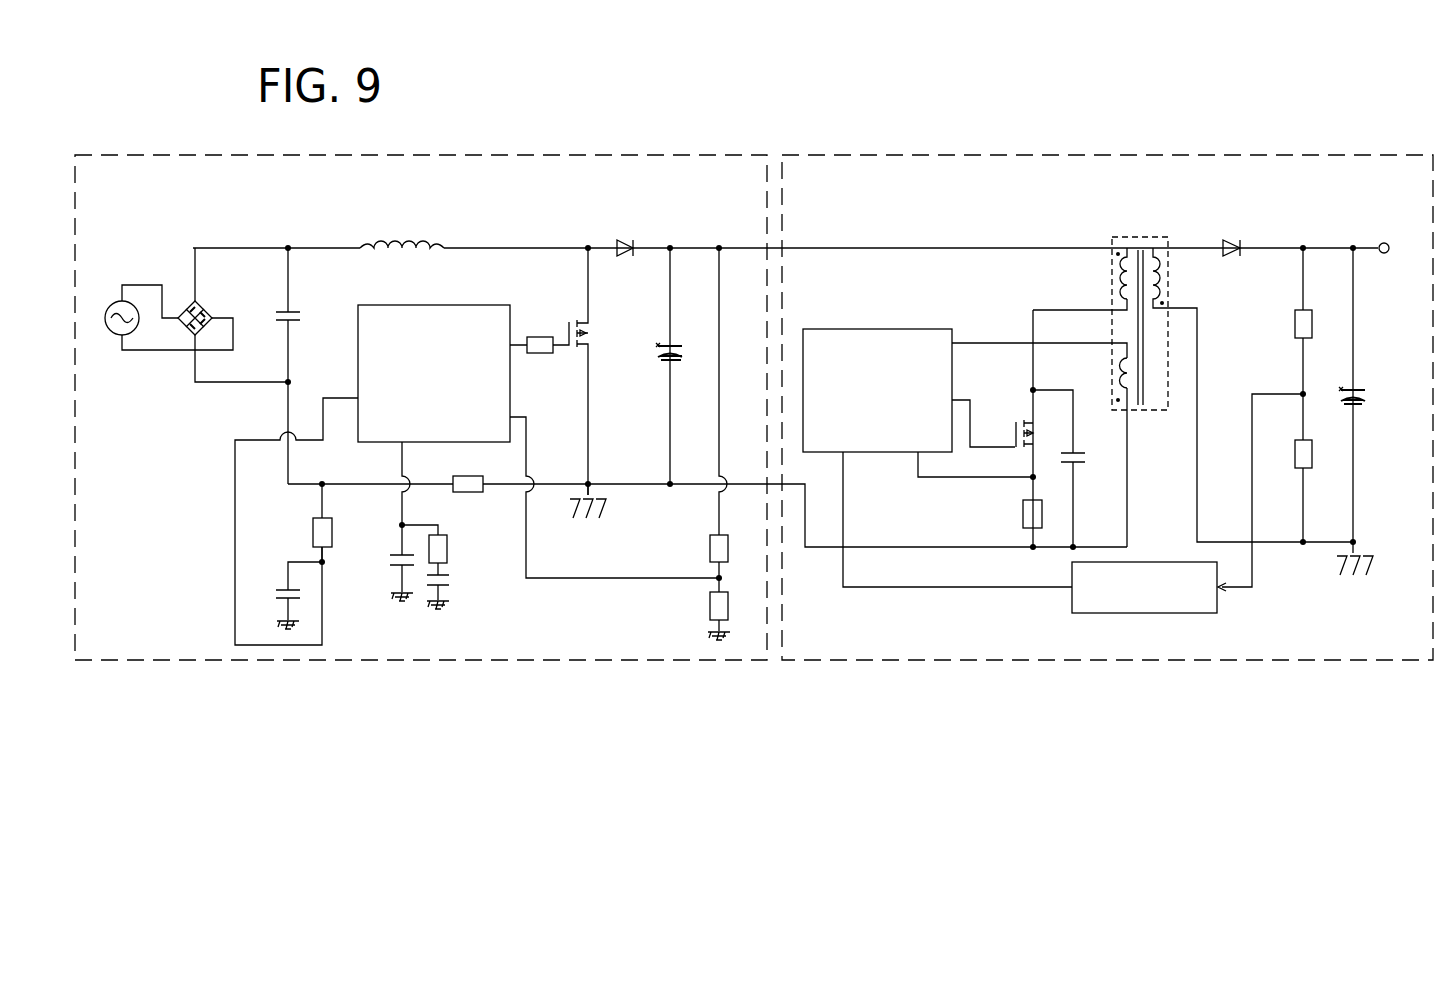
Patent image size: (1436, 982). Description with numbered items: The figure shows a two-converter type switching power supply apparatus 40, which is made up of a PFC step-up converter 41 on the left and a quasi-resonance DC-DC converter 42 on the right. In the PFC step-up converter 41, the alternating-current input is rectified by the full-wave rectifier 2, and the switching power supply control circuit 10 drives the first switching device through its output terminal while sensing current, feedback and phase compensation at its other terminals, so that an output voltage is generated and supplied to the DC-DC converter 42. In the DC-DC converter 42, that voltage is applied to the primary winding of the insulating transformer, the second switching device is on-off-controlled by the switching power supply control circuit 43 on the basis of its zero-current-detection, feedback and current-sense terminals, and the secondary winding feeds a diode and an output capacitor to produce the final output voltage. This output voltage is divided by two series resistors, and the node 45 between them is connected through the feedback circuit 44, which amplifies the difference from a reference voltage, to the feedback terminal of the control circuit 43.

The full-wave rectifier 2 is at (207, 310).
The switching power supply control circuit 10 is at (437, 305).
The switching power supply apparatus 40 is at (1338, 69).
The PFC step-up converter 41 is at (572, 155).
The quasi-resonance DC-DC converter 42 is at (1033, 155).
The switching power supply control circuit 43 is at (855, 329).
The feedback circuit 44 is at (1165, 613).
The node 45 is at (1299, 393).